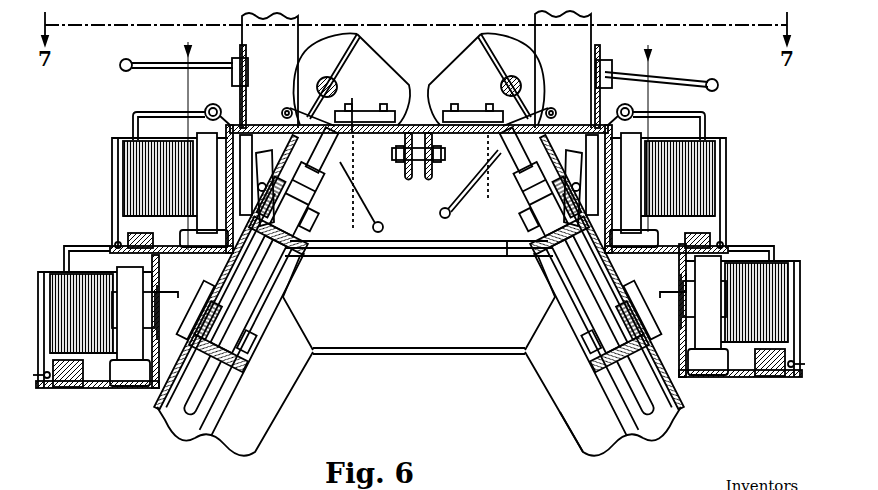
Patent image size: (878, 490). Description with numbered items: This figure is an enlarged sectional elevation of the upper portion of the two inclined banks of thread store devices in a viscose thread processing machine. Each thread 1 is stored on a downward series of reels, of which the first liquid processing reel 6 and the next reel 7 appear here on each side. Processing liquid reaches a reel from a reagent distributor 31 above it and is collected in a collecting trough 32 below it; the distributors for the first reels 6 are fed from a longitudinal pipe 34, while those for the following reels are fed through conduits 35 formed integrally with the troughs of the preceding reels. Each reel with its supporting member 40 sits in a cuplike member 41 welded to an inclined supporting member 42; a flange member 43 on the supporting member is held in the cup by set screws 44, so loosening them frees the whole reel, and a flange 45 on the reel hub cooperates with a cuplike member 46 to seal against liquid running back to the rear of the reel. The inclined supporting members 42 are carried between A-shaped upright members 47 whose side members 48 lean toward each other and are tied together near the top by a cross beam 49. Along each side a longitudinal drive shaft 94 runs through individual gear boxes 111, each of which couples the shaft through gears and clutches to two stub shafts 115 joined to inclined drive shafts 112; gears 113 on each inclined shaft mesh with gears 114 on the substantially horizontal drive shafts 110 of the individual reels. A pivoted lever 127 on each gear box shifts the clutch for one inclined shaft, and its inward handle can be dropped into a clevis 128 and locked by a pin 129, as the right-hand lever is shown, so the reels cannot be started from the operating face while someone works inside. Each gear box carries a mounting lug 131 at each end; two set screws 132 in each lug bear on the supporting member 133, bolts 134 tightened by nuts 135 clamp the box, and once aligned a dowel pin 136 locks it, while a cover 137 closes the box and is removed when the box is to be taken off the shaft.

The thread 1 is at (188, 40).
The thread store device 6 is at (125, 176).
The thread store device 7 is at (56, 306).
The reagent distributor 31 is at (146, 114).
The collecting trough 32 is at (114, 143).
The pipe 34 is at (213, 104).
The conduit 35 is at (135, 233).
The supporting member 40 is at (178, 286).
The cuplike member 41 is at (265, 150).
The inclined supporting member 42 is at (294, 291).
The flange member 43 is at (203, 349).
The set screw 44 is at (290, 246).
The flange 45 is at (130, 292).
The cuplike member 46 is at (262, 248).
The upright member 47 is at (570, 428).
The side member 48 is at (290, 392).
The cross beam 49 is at (423, 330).
The drive shaft 94 is at (327, 77).
The horizontal drive shaft 110 is at (232, 313).
The gear box 111 is at (448, 72).
The inclined drive shaft 112 is at (208, 402).
The gear 113 is at (364, 232).
The gear 114 is at (228, 321).
The stub shaft 115 is at (358, 172).
The lever 127 is at (126, 59).
The clevis 128 is at (470, 180).
The pin 129 is at (510, 172).
The mounting lug 131 is at (398, 116).
The set screw 132 is at (398, 74).
The supporting member 133 is at (418, 128).
The bolt 134 is at (372, 109).
The nut 135 is at (415, 157).
The dowel pin 136 is at (352, 120).
The cover 137 is at (303, 76).